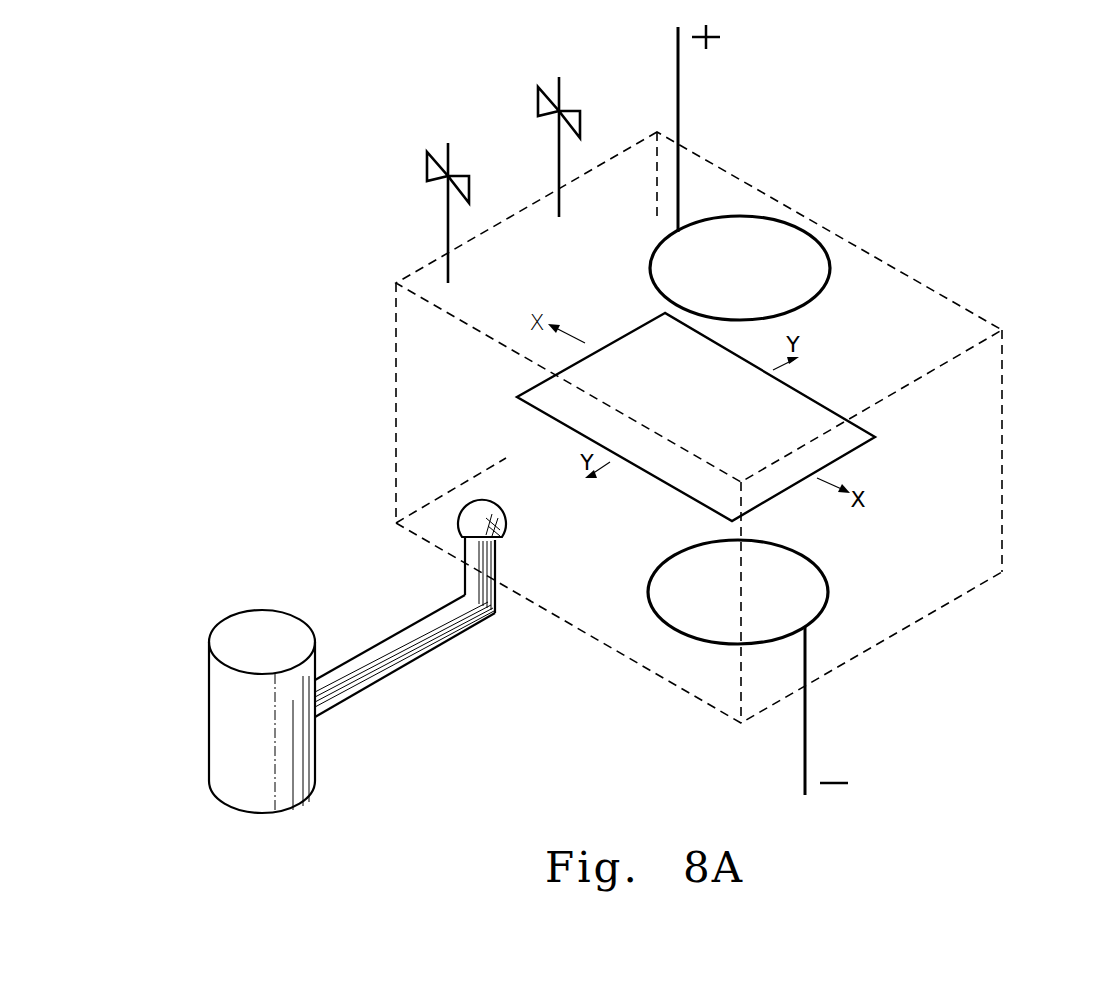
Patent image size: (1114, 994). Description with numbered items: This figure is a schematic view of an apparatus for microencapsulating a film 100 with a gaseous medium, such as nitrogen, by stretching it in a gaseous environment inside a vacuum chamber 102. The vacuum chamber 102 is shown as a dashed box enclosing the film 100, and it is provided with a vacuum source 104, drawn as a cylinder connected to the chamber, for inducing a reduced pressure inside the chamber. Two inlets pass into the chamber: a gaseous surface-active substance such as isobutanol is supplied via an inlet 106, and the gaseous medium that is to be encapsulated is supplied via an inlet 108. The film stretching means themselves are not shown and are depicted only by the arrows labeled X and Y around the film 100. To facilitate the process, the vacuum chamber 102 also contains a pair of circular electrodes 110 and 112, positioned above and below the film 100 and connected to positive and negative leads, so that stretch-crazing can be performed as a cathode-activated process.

The film 100 is at (858, 438).
The vacuum chamber 102 is at (945, 297).
The vacuum source 104 is at (240, 640).
The inlet 106 is at (443, 160).
The inlet 108 is at (553, 98).
The circular electrode 110 is at (808, 232).
The circular electrode 112 is at (663, 628).